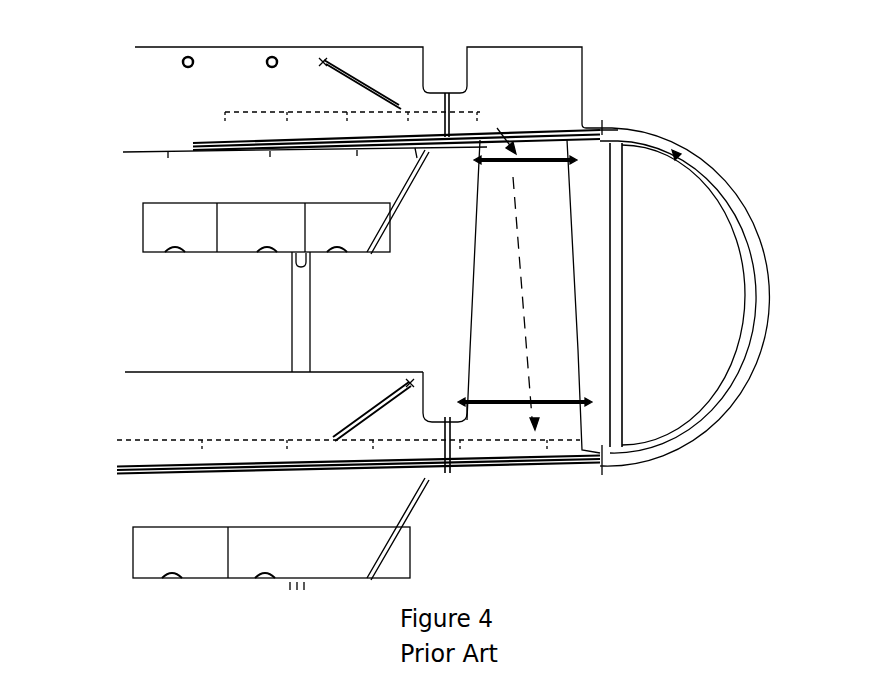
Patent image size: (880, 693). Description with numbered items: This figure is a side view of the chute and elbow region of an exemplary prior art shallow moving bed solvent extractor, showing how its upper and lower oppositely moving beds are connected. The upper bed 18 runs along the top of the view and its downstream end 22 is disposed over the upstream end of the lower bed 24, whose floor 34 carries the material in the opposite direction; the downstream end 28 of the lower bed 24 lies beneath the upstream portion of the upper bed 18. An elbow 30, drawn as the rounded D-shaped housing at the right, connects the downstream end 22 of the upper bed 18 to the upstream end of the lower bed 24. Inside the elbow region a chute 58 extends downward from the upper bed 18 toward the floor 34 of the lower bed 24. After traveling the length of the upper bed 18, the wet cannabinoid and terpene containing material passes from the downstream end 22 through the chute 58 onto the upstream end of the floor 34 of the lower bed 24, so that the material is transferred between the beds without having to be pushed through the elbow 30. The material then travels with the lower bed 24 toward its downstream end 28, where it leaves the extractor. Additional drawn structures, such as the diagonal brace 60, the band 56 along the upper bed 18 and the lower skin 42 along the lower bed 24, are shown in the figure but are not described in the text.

The upper bed 18 is at (227, 64).
The upper diagonal strut 60 is at (340, 76).
The downstream end of the upper bed 22 is at (421, 103).
The upper seal band 56 is at (240, 127).
The chute 58 is at (488, 310).
The elbow 30 is at (679, 304).
The lower bed 24 is at (163, 397).
The floor of the lower bed 34 is at (226, 476).
The downstream end of the lower bed 28 is at (433, 435).
The lower skin 42 is at (567, 470).